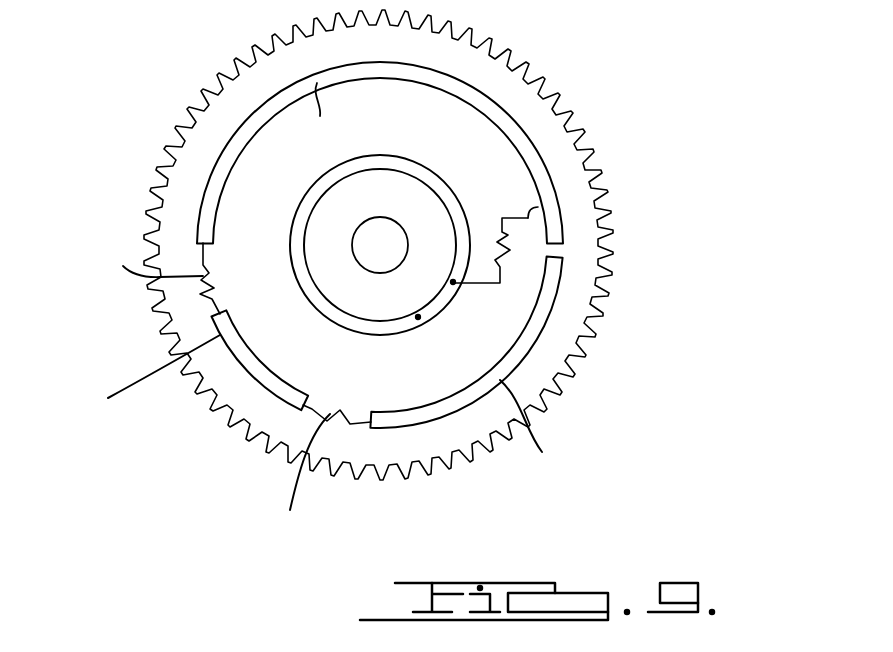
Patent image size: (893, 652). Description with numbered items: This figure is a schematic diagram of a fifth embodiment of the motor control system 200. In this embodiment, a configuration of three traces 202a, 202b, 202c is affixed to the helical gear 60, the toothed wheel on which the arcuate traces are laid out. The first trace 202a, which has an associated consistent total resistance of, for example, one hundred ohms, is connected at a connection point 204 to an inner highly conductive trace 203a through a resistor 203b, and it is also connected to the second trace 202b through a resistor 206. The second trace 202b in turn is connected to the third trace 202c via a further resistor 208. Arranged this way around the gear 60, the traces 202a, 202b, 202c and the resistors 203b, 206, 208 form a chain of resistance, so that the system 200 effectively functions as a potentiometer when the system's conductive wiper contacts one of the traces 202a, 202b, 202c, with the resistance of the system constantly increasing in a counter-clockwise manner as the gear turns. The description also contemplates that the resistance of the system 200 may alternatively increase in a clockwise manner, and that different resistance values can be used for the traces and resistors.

The helical gear 60 is at (218, 80).
The motor control system 200 is at (694, 167).
The trace 202a is at (505, 120).
The trace 202b is at (255, 373).
The trace 202c is at (533, 333).
The inner highly conductive trace 203a is at (418, 318).
The resistor 203b is at (528, 207).
The connection point 204 is at (493, 240).
The resistor 206 is at (202, 263).
The resistor 208 is at (326, 403).